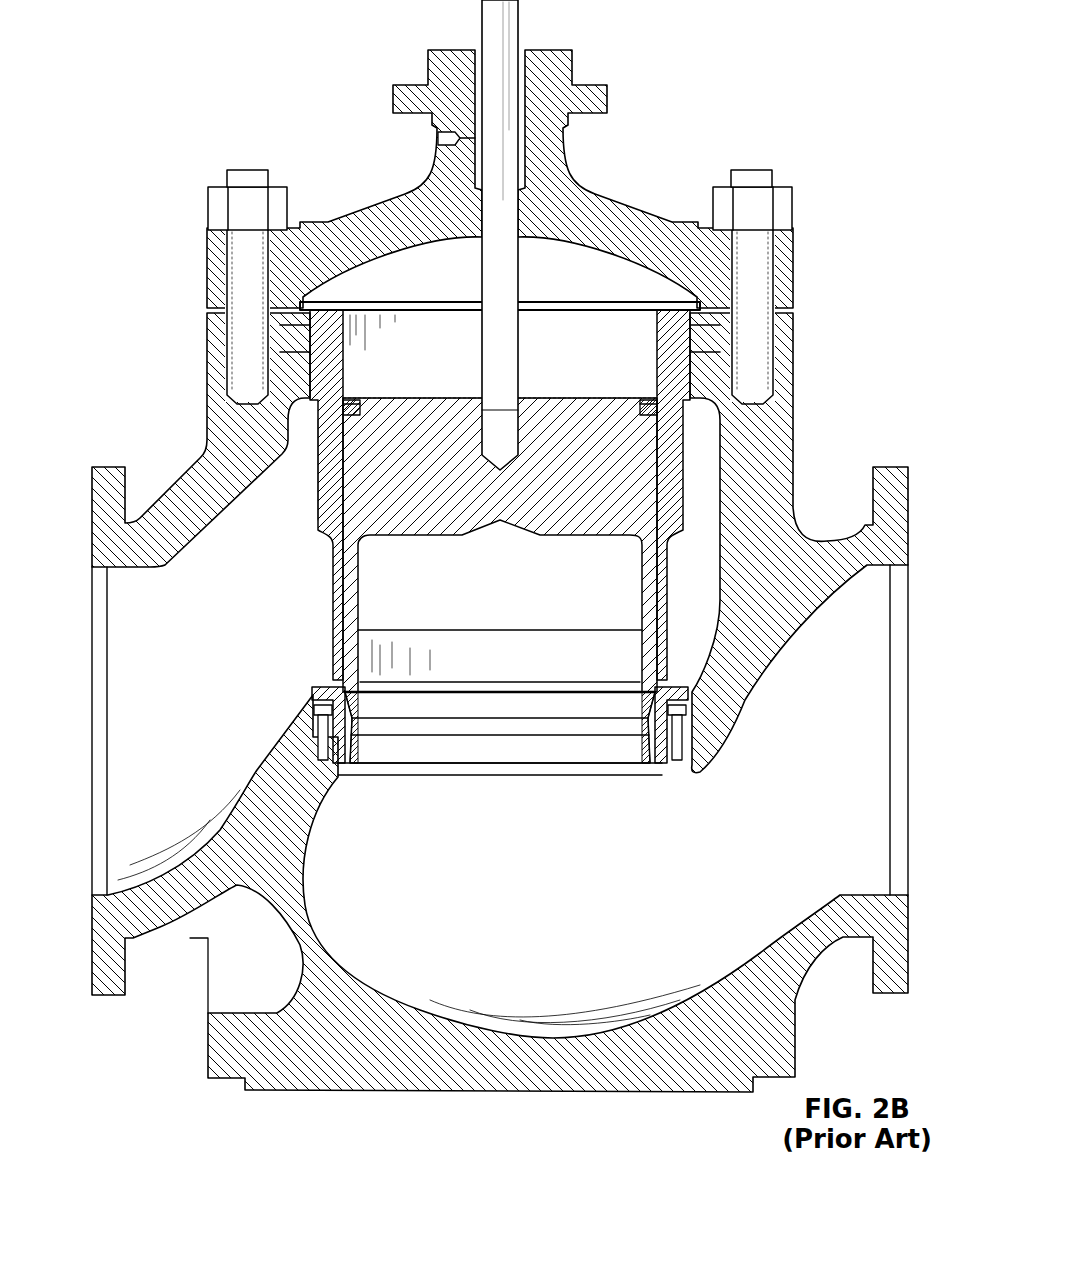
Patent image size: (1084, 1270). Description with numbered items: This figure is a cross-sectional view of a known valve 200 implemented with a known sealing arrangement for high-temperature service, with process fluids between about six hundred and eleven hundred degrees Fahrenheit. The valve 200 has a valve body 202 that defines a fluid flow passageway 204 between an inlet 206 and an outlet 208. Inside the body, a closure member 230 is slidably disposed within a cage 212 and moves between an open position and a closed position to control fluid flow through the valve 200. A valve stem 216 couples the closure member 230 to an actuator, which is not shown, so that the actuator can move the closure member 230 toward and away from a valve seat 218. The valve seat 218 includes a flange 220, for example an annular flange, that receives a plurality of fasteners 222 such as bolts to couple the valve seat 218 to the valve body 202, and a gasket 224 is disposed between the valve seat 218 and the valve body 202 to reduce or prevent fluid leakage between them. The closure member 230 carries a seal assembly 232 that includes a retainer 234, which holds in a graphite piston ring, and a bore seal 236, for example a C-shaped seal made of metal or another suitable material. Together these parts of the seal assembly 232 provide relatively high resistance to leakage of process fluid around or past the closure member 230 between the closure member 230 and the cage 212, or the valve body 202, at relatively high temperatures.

The valve 200 is at (755, 66).
The valve body 202 is at (797, 1000).
The fluid flow passageway 204 is at (482, 901).
The inlet 206 is at (908, 696).
The outlet 208 is at (93, 686).
The cage 212 is at (672, 462).
The valve stem 216 is at (518, 22).
The valve seat 218 is at (652, 740).
The flange 220 is at (688, 728).
The fasteners 222 is at (318, 710).
The gasket 224 is at (340, 780).
The closure member 230 is at (560, 398).
The seal assembly 232 is at (330, 407).
The retainer 234 is at (363, 410).
The bore seal 236 is at (323, 500).